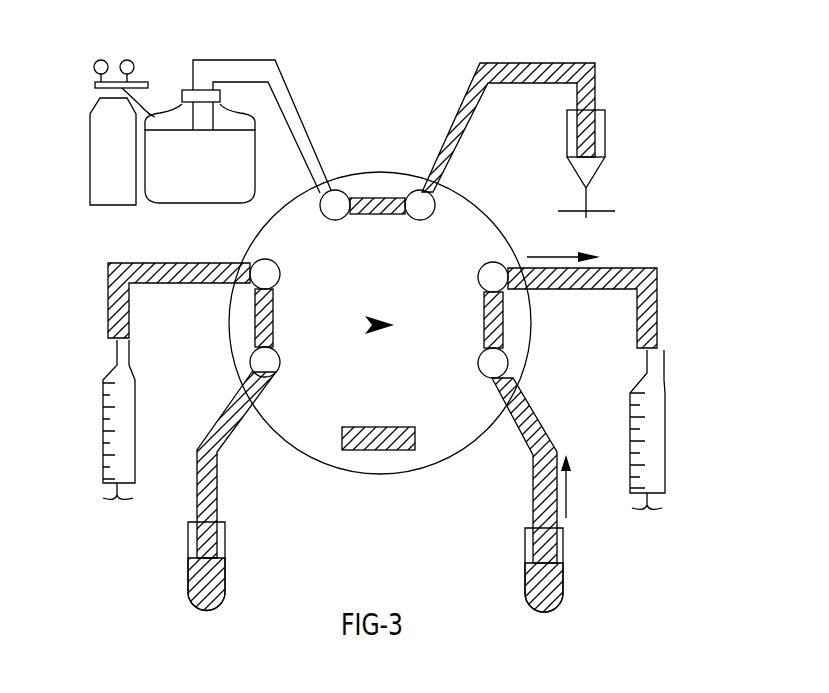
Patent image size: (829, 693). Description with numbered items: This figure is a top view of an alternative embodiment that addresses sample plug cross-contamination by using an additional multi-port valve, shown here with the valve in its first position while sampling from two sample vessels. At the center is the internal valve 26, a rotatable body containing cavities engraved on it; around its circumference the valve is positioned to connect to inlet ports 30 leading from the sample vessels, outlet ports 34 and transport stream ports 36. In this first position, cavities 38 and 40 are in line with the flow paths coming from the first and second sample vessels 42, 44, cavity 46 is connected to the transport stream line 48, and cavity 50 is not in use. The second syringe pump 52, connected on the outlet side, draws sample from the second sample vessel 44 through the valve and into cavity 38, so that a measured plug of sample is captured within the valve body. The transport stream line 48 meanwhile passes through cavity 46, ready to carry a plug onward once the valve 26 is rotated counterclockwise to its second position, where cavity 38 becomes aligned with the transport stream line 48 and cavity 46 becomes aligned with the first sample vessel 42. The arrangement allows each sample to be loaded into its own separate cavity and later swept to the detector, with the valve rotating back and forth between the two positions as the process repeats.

The internal valve 26 is at (495, 237).
The inlet ports 30 is at (495, 363).
The outlet ports 34 is at (497, 275).
The transport stream ports 36 is at (418, 200).
The cavity 38 is at (500, 333).
The cavity 40 is at (257, 318).
The first sample vessel 42 is at (187, 572).
The second sample vessel 44 is at (562, 585).
The cavity 46 is at (330, 205).
The transport stream line 48 is at (300, 118).
The cavity 50 is at (392, 442).
The second syringe pump 52 is at (652, 432).